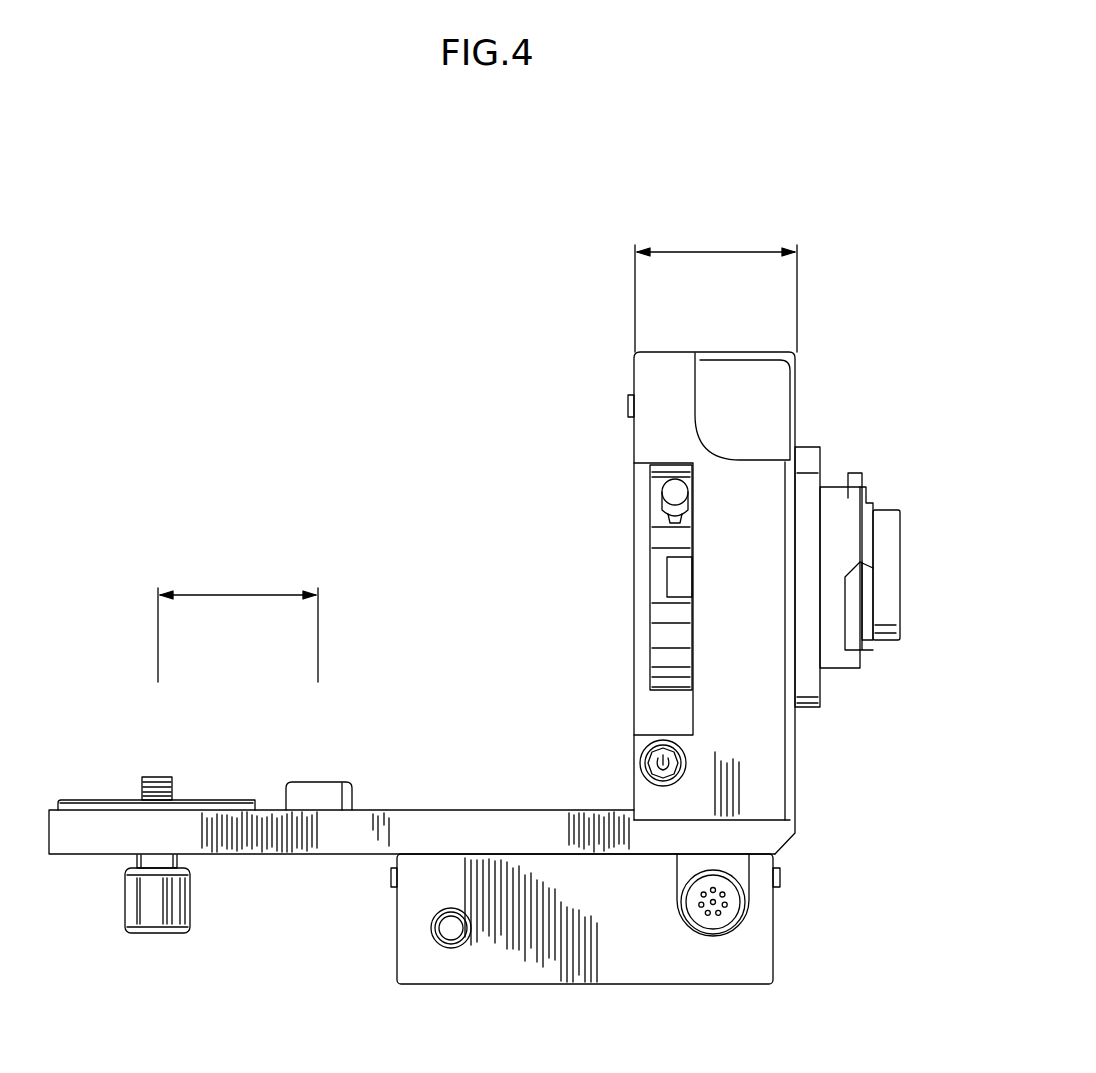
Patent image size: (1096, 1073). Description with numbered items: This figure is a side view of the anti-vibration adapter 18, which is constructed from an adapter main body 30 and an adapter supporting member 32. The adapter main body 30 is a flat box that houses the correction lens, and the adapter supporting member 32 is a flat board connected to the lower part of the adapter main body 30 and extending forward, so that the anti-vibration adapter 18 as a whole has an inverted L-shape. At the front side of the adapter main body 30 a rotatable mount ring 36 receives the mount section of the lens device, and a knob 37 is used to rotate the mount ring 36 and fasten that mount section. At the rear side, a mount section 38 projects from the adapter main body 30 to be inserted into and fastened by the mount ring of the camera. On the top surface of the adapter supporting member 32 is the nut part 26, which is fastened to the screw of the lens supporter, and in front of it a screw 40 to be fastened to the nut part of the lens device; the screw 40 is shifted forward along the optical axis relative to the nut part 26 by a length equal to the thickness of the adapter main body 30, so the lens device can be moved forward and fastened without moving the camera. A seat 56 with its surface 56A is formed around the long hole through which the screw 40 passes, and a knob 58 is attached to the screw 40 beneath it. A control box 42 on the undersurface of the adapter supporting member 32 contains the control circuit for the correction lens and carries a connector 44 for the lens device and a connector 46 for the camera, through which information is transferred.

The anti-vibration adapter 18 is at (563, 457).
The nut part 26 is at (318, 790).
The adapter main body 30 is at (660, 375).
The adapter supporting member 32 is at (430, 820).
The mount ring 36 is at (652, 622).
The knob 37 is at (658, 508).
The mount section 38 is at (887, 515).
The screw 40 is at (155, 776).
The control box 42 is at (570, 962).
The connector 44 is at (453, 946).
The connector 46 is at (710, 915).
The seat 56 is at (87, 803).
The plate upper surface 56A is at (122, 800).
The knob 58 is at (153, 910).